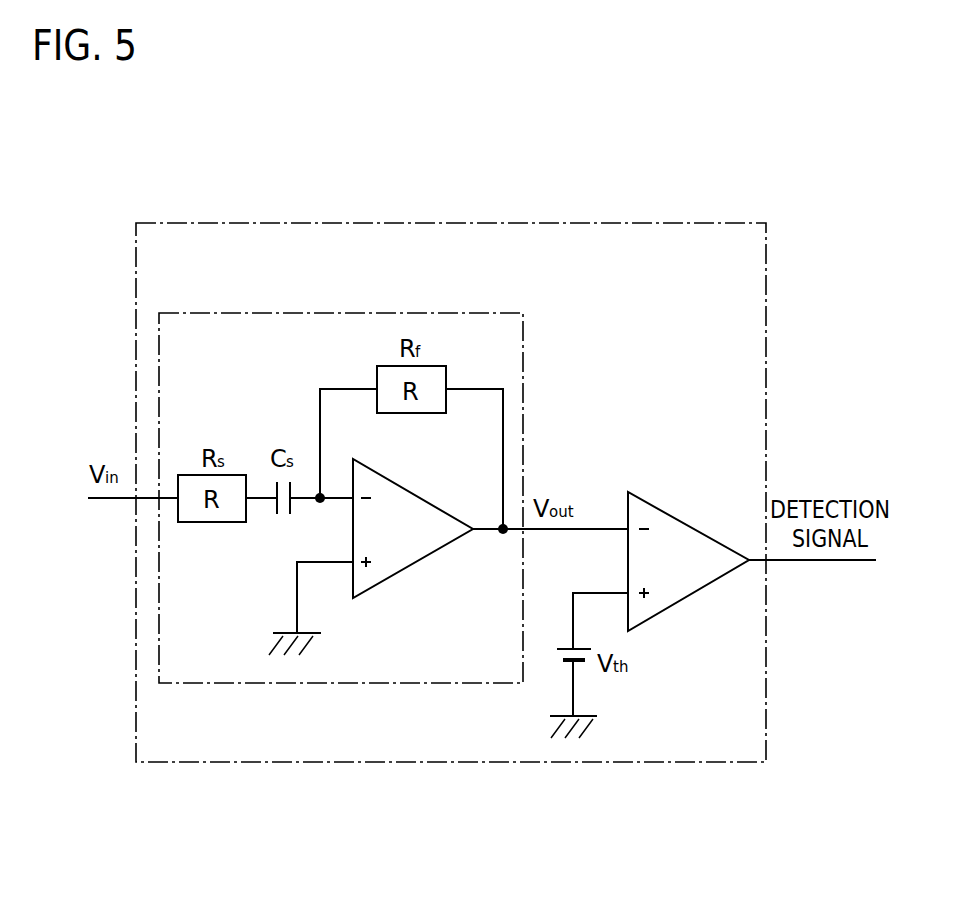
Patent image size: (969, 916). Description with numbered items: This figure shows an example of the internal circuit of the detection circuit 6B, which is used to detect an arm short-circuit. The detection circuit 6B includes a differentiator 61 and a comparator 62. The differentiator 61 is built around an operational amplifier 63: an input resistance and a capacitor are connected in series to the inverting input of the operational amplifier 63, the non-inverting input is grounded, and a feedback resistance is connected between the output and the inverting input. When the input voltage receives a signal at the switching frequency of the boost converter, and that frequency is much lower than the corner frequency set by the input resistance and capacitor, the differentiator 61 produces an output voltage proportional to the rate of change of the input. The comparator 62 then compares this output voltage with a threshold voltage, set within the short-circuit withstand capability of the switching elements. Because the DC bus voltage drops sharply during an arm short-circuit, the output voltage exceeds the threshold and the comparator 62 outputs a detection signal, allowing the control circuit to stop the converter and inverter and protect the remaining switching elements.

The detection circuit 6B is at (472, 222).
The differentiator 61 is at (348, 313).
The comparator 62 is at (696, 527).
The operational amplifier 63 is at (417, 563).